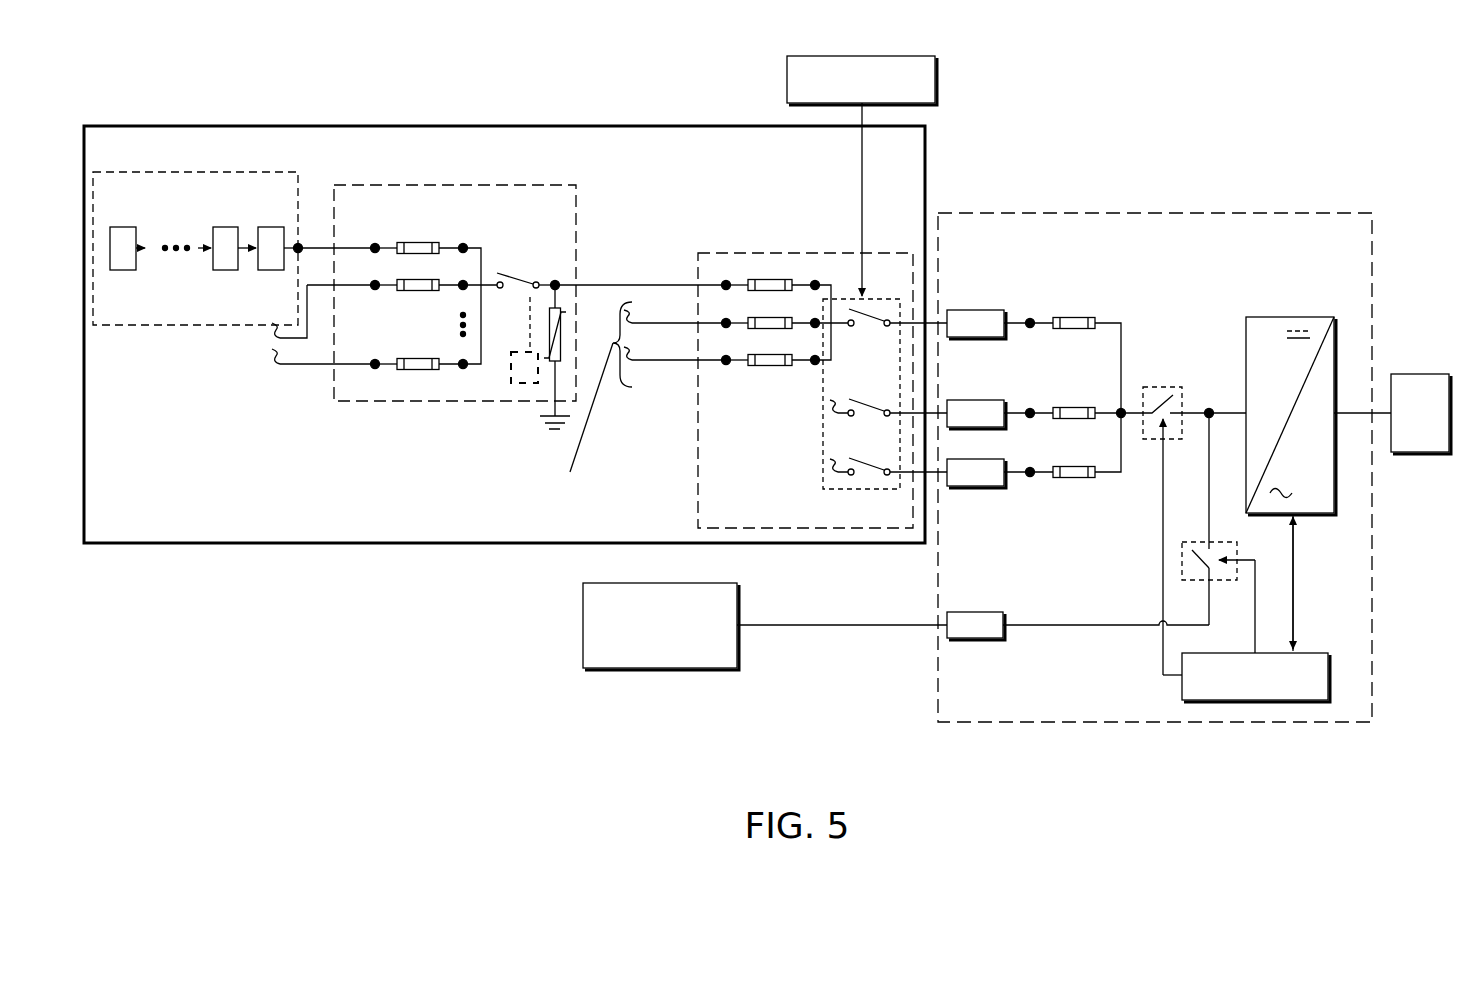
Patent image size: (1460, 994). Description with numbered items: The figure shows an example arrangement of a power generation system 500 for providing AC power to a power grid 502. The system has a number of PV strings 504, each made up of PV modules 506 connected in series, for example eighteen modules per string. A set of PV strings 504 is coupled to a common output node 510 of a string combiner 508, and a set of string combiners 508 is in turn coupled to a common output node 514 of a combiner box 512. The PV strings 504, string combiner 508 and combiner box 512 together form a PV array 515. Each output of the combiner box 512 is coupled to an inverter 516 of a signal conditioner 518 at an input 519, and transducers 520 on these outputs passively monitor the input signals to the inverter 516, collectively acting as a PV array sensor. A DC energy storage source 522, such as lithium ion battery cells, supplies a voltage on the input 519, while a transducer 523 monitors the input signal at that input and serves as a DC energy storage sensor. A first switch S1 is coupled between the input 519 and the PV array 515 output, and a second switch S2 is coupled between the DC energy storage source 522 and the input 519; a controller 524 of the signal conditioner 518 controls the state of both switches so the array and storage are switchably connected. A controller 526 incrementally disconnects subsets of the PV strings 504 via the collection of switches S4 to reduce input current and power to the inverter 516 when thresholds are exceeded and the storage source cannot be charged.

The power generation system 500 is at (170, 68).
The power grid 502 is at (1420, 453).
The PV string 504 is at (159, 327).
The PV module 506 is at (124, 270).
The string combiner 508 is at (485, 307).
The common output node 510 is at (500, 289).
The combiner box 512 is at (698, 441).
The common output node 514 is at (852, 327).
The PV array 515 is at (305, 545).
The inverter 516 is at (1290, 317).
The signal conditioner 518 is at (1372, 262).
The input 519 is at (1210, 408).
The transducer 520 is at (977, 310).
The DC energy storage source 522 is at (583, 626).
The transducer 523 is at (975, 639).
The controller 524 is at (1182, 696).
The controller 526 is at (787, 81).
The first switch S1 is at (1164, 384).
The second switch S2 is at (1237, 546).
The collection of switches S4 is at (836, 394).